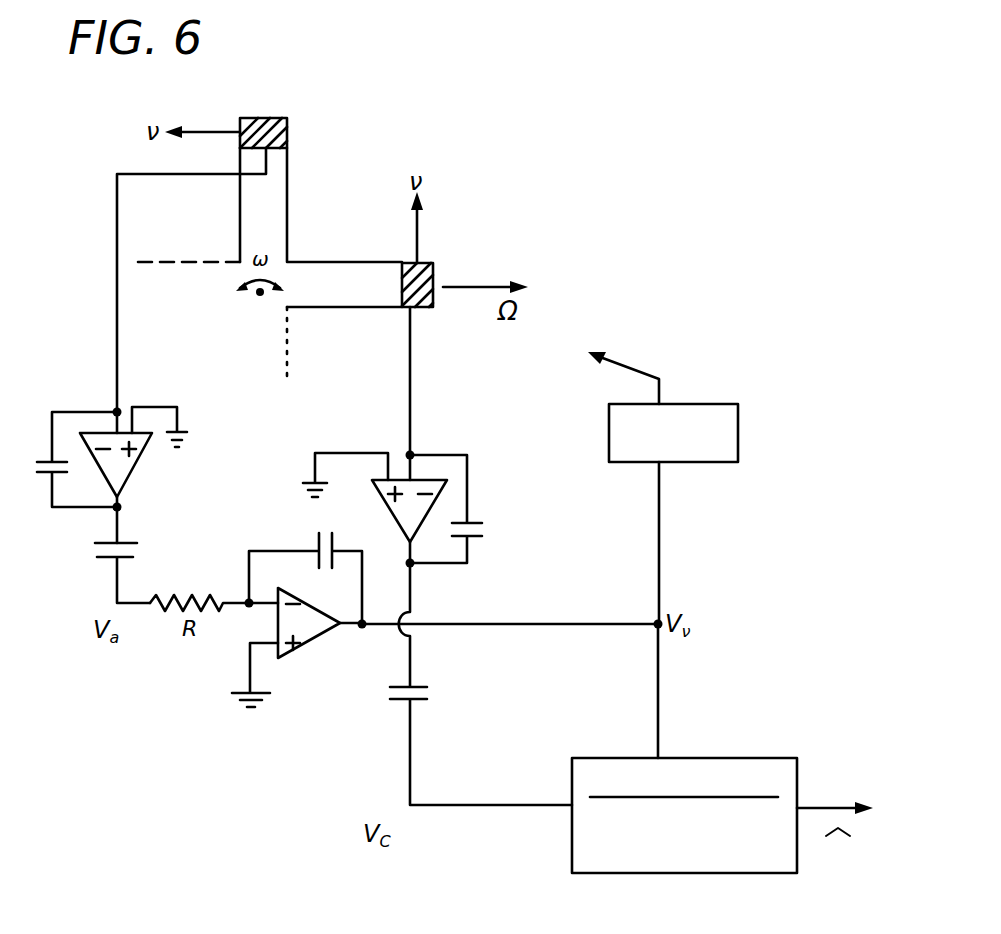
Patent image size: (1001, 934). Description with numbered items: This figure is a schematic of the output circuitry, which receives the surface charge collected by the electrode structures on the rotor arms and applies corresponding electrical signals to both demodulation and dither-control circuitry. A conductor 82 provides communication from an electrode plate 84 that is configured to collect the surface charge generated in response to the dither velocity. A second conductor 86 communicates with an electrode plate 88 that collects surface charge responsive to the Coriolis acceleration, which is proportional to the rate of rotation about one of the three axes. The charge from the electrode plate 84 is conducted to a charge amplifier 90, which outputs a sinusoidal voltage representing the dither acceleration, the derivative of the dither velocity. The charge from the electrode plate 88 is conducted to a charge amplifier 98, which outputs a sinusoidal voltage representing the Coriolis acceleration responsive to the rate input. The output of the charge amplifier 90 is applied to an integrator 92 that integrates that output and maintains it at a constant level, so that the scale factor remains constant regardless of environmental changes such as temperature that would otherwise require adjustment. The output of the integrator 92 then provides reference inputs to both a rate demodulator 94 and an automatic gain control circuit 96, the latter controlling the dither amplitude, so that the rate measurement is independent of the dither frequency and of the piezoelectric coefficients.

The conductor 82 is at (115, 358).
The electrode plate 84 is at (287, 133).
The second conductor 86 is at (410, 373).
The electrode plate 88 is at (433, 275).
The charge amplifier 90 is at (143, 486).
The integrator 92 is at (268, 535).
The rate demodulator 94 is at (705, 758).
The automatic gain control circuit 96 is at (675, 462).
The charge amplifier 98 is at (383, 526).